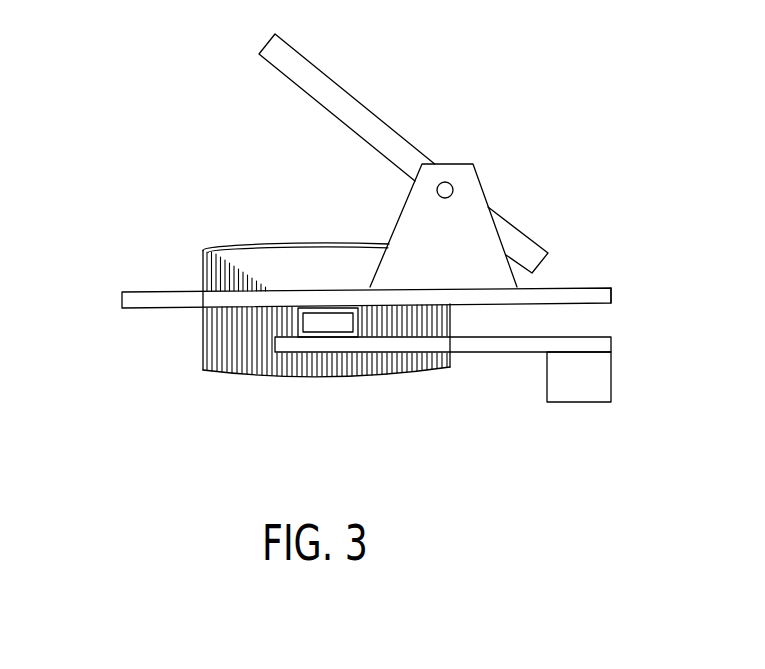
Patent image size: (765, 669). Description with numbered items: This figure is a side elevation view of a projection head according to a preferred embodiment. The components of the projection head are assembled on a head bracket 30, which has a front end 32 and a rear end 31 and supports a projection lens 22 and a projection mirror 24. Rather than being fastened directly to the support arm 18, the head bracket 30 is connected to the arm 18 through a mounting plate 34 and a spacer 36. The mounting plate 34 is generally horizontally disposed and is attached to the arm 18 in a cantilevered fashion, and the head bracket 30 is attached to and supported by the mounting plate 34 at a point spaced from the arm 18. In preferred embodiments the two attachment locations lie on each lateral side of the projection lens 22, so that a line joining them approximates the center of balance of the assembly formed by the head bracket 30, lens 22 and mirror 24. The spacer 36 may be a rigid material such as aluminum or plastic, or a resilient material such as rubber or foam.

The support arm 18 is at (573, 402).
The projection lens 22 is at (215, 370).
The projection mirror 24 is at (362, 98).
The head bracket 30 is at (568, 288).
The rear end 31 is at (612, 290).
The front end 32 is at (122, 299).
The mounting plate 34 is at (586, 337).
The spacer 36 is at (358, 327).